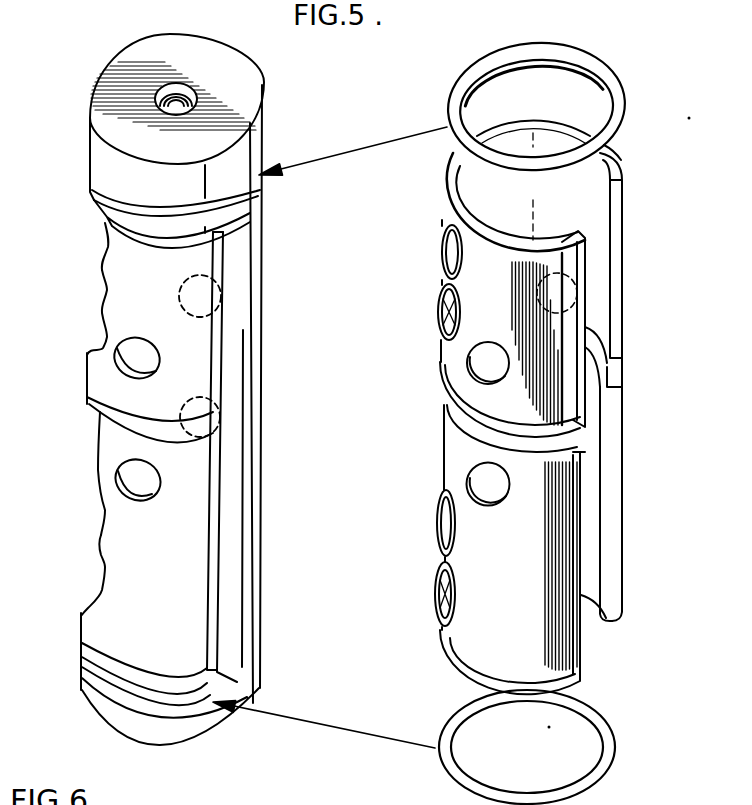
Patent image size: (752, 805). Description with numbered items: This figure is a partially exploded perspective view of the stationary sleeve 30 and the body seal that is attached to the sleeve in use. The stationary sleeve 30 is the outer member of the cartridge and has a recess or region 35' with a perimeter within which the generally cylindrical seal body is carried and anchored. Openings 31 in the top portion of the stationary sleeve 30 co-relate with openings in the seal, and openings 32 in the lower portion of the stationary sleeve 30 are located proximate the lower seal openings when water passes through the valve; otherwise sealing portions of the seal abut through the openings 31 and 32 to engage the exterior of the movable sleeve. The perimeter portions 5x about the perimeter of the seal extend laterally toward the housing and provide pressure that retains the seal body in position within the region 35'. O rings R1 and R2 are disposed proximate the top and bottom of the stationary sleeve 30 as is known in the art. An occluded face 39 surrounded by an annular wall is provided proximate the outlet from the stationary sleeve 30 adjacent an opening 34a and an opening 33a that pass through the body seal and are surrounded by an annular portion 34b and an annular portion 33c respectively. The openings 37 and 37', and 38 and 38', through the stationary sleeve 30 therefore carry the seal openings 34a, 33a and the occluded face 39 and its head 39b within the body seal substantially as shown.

The stationary sleeve 30 is at (250, 90).
The openings 31 is at (132, 352).
The openings 32 is at (133, 472).
The opening through the stationary sleeve 37' is at (72, 246).
The opening through the stationary sleeve 37 is at (79, 312).
The opening through the stationary sleeve 38' is at (69, 473).
The opening through the stationary sleeve 38 is at (71, 575).
The recess 35' is at (254, 394).
The O ring R1 is at (612, 96).
The O ring R2 is at (605, 735).
The perimeter portions 5x is at (578, 685).
The opening 34a is at (447, 253).
The annular portion 34b is at (462, 272).
The opening 33a is at (443, 528).
The annular portion 33c is at (455, 535).
The occluded face 39 is at (444, 313).
The rivet head 39b is at (447, 340).